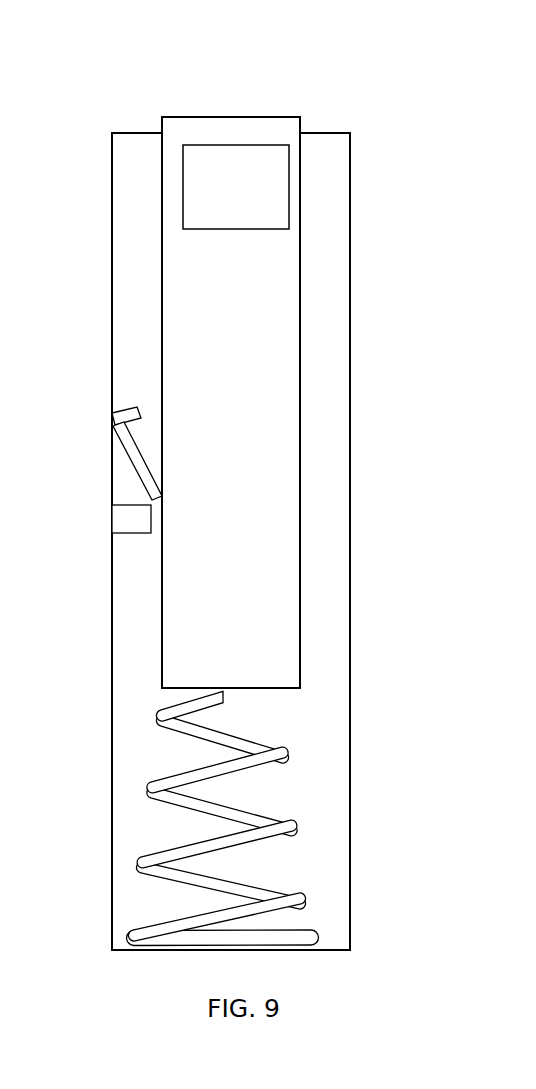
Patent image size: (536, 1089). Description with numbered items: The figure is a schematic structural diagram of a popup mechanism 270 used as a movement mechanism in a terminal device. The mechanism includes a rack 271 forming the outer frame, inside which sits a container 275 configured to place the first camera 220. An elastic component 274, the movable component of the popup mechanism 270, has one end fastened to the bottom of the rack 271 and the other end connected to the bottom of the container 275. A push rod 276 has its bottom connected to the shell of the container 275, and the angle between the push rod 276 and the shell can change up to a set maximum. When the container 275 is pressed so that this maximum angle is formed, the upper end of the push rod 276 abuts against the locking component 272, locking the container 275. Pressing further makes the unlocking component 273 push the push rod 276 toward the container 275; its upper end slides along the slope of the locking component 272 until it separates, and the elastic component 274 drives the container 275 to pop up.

The popup mechanism 270 is at (245, 486).
The first camera 220 is at (282, 167).
The container 275 is at (295, 238).
The rack 271 is at (351, 390).
The locking component 272 is at (128, 410).
The push rod 276 is at (122, 444).
The unlocking component 273 is at (125, 517).
The elastic component 274 is at (280, 810).